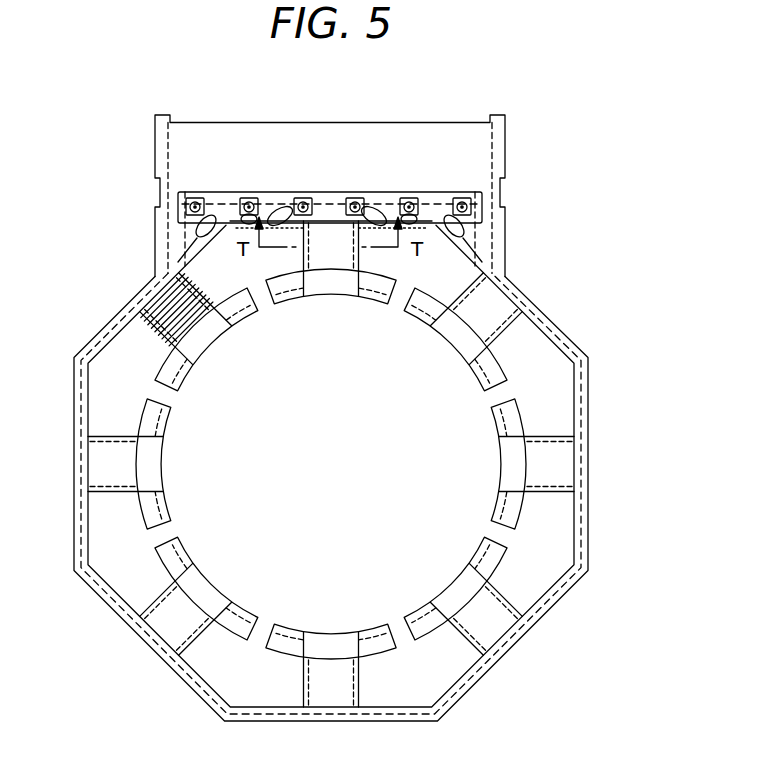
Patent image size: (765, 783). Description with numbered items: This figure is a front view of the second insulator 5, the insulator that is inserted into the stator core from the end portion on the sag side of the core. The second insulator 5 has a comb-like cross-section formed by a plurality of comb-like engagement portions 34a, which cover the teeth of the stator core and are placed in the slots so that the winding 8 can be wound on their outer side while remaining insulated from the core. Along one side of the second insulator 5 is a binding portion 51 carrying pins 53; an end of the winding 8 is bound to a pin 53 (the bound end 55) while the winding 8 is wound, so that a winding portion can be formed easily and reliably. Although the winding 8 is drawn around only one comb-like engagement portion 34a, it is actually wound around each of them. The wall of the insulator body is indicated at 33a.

The second insulator 5 is at (586, 247).
The winding 8 is at (150, 340).
The housing side wall 33a is at (562, 330).
The comb-like engagement portion 34a is at (365, 238).
The binding portion 51 is at (450, 192).
The pin 53 is at (258, 214).
The bound end of winding 55 is at (287, 209).